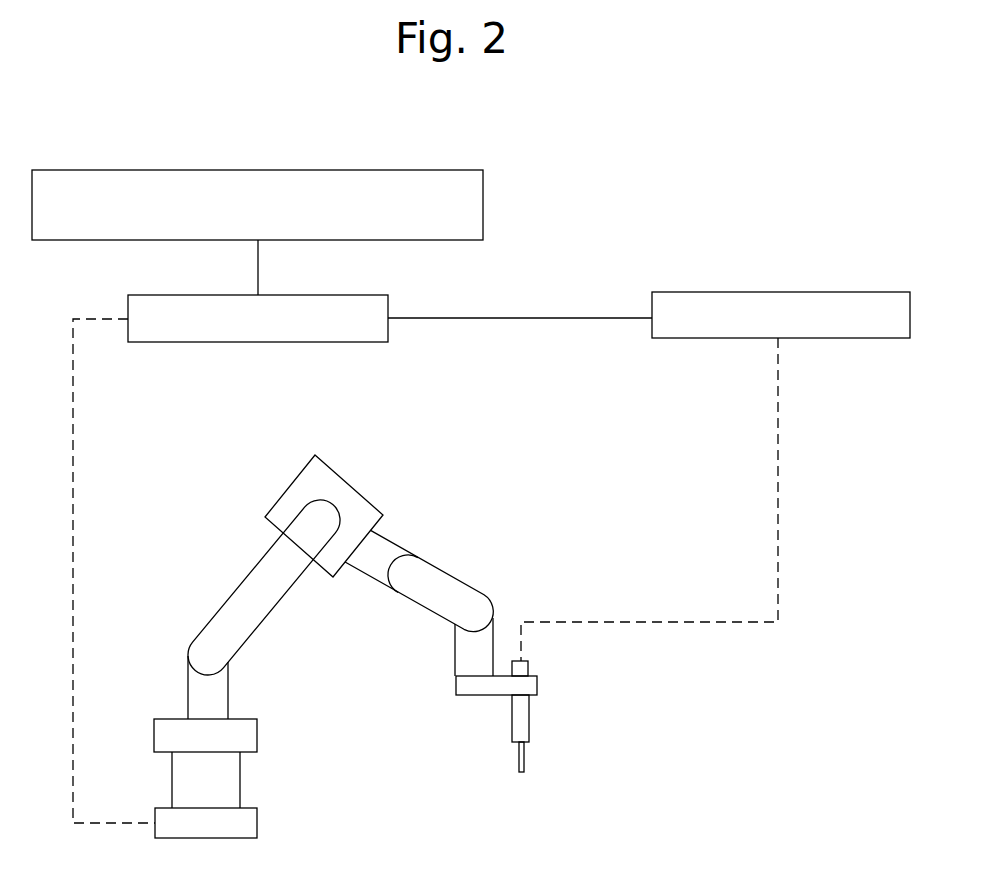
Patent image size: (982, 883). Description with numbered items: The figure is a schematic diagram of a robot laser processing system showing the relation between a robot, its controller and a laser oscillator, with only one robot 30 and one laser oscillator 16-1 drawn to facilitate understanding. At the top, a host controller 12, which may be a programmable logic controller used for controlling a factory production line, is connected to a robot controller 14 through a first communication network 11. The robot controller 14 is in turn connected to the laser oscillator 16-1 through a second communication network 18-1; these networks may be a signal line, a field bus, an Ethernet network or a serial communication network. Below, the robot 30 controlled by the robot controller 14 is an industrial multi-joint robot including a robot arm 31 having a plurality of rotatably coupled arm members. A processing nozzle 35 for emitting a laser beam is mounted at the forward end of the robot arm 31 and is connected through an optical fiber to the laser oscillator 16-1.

The host controller 12 is at (375, 169).
The first communication network 11 is at (258, 269).
The robot controller 14 is at (213, 342).
The second communication network 18-1 is at (482, 318).
The laser oscillator 16-1 is at (785, 292).
The robot 30 is at (386, 625).
The robot arm 31 is at (437, 572).
The processing nozzle 35 is at (530, 718).